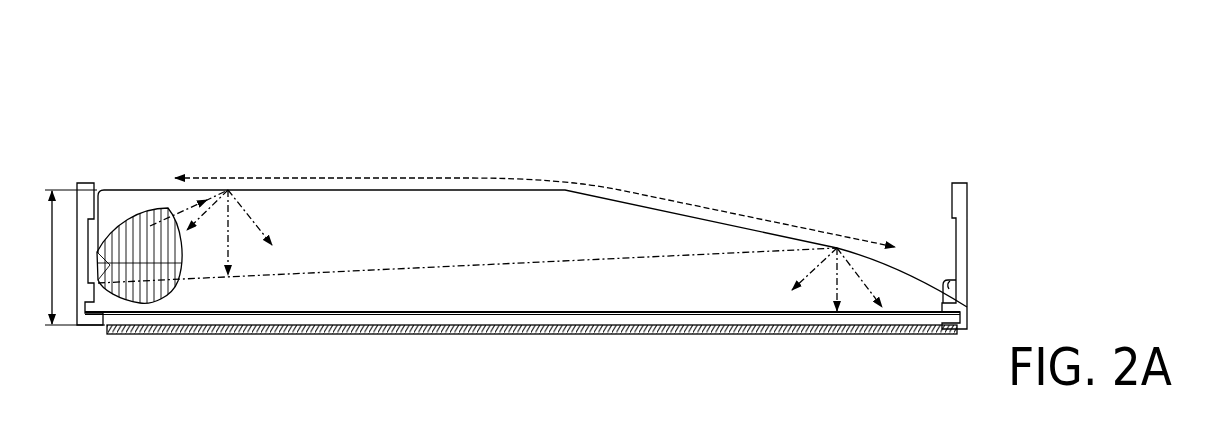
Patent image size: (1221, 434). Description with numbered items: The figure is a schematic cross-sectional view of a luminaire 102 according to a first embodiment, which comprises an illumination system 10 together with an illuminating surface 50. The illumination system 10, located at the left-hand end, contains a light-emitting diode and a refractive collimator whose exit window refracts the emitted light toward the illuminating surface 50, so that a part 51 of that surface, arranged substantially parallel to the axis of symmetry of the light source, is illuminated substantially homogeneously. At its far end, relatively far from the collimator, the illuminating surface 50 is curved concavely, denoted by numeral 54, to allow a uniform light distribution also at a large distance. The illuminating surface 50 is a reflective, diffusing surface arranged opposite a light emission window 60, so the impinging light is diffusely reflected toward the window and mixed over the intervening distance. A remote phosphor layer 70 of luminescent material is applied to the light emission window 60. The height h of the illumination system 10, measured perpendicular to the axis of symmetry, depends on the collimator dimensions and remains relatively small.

The luminaire 102 is at (867, 103).
The illumination system 10 is at (128, 208).
The illuminating surface 50 is at (467, 191).
The homogeneously illuminated part 51 is at (535, 199).
The concavely curved far end 54 is at (795, 218).
The light emission window 60 is at (410, 317).
The remote phosphor layer 70 is at (330, 334).
The height h is at (69, 257).